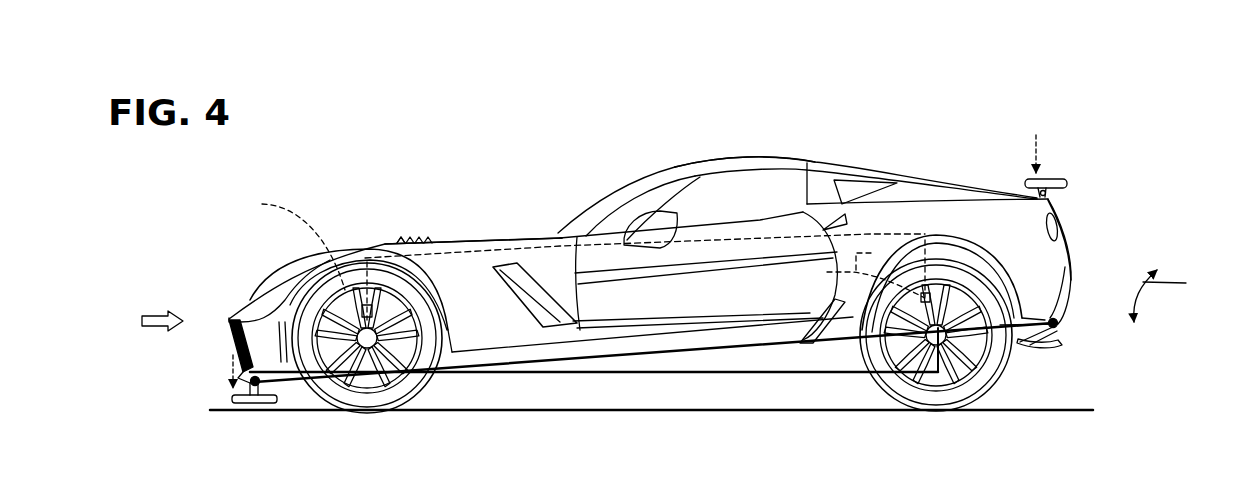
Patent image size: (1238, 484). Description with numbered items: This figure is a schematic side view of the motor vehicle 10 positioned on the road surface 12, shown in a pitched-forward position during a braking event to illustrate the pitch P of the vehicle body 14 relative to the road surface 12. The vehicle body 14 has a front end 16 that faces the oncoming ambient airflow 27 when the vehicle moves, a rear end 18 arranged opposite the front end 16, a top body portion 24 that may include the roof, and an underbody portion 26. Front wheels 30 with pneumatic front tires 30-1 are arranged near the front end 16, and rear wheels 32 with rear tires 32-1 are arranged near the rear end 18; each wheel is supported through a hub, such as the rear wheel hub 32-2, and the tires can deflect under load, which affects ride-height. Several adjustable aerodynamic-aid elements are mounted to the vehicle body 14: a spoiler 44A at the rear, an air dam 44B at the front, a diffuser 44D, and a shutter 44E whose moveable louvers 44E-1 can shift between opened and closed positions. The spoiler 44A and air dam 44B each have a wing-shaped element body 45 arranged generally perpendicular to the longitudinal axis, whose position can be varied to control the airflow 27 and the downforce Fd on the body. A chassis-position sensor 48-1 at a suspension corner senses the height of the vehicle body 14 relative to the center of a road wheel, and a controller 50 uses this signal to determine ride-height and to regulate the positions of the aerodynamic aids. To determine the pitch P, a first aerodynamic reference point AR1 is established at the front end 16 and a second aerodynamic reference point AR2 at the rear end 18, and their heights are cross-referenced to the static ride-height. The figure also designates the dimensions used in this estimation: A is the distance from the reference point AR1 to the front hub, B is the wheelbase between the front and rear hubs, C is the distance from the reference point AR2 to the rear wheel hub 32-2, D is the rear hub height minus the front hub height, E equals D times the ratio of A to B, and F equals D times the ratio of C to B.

The motor vehicle 10 is at (955, 128).
The road surface 12 is at (701, 412).
The vehicle body 14 is at (510, 240).
The front end 16 is at (228, 316).
The rear end 18 is at (1074, 236).
The top body portion 24 is at (762, 152).
The underbody portion 26 is at (485, 372).
The ambient airflow 27 is at (152, 313).
The front wheels 30 is at (387, 243).
The front tires 30-1 is at (410, 375).
The rear wheels 32 is at (955, 380).
The rear tires 32-1 is at (898, 398).
The rear wheel hub 32-2 is at (405, 343).
The spoiler 44A is at (1045, 175).
The air dam 44B is at (228, 399).
The diffuser 44D is at (1062, 350).
The shutter 44E is at (430, 236).
The moveable louvers 44E-1 is at (397, 240).
The element body 45 is at (1068, 181).
The chassis-position sensor 48-1 is at (574, 257).
The controller 50 is at (506, 296).
The first aerodynamic reference point AR1 is at (262, 383).
The second aerodynamic reference point AR2 is at (1056, 323).
The dimension A is at (335, 372).
The dimension B is at (691, 348).
The dimension C is at (1024, 322).
The dimension D is at (935, 362).
The dimension E is at (385, 388).
The dimension F is at (1062, 327).
The pitch P is at (1155, 298).
The downforce Fd is at (228, 372).